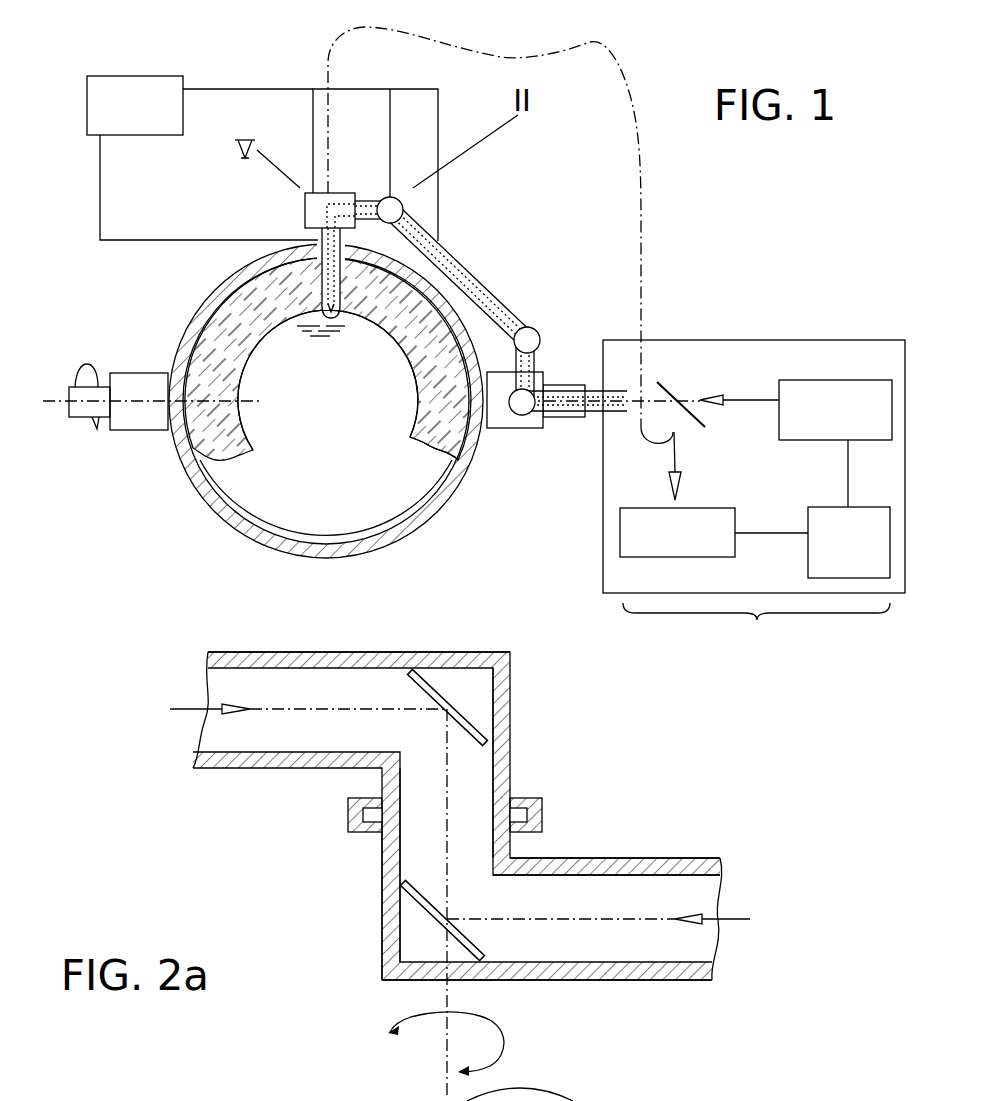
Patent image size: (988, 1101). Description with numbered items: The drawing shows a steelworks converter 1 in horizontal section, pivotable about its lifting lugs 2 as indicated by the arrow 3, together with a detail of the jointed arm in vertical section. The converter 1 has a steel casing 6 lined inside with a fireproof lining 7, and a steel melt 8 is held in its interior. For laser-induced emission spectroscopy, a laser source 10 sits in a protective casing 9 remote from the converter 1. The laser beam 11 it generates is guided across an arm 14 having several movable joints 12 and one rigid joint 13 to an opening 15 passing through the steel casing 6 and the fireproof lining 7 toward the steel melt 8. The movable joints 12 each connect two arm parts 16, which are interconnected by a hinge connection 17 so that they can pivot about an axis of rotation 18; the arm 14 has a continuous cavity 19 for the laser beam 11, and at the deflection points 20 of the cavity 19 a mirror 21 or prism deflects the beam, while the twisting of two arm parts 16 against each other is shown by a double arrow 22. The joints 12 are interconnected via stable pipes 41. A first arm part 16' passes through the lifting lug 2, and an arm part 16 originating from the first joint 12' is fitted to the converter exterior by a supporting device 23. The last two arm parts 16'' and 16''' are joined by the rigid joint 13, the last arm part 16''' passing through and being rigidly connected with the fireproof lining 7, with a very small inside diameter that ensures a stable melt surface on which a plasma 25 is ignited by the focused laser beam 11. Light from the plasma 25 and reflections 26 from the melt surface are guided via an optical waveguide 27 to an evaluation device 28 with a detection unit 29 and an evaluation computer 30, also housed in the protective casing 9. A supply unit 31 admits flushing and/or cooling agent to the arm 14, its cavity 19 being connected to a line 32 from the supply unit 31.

In FIG. 1, the steelworks converter 1 is at (212, 515).
In FIG. 1, the lifting lugs 2 is at (78, 420).
In FIG. 1, the arrow 3 is at (80, 372).
In FIG. 1, the steel casing 6 is at (400, 523).
In FIG. 1, the fireproof lining 7 is at (177, 445).
In FIG. 1, the steel melt 8 is at (296, 416).
In FIG. 1, the protective casing 9 is at (818, 595).
In FIG. 1, the laser source 10 is at (816, 421).
In FIG. 1, the laser beam 11 is at (733, 400).
In FIG. 2a, the laser beam 11 is at (742, 920).
In FIG. 1, the movable joints 12 is at (550, 328).
In FIG. 2a, the movable joints 12 is at (321, 906).
In FIG. 1, the first joint 12' is at (508, 456).
In FIG. 1, the rigid joint 13 is at (297, 222).
In FIG. 1, the arm 14 is at (480, 248).
In FIG. 2a, the arm 14 is at (198, 645).
In FIG. 1, the opening 15 is at (357, 270).
In FIG. 1, the arm parts 16 is at (553, 299).
In FIG. 2a, the arm parts 16 is at (429, 866).
In FIG. 1, the first arm part 16' is at (630, 338).
In FIG. 1, the arm part 16'' is at (362, 166).
In FIG. 1, the last arm part 16''' is at (367, 360).
In FIG. 2a, the hinge connection 17 is at (363, 830).
In FIG. 2a, the axis of rotation 18 is at (447, 767).
In FIG. 2a, the cavity 19 is at (637, 947).
In FIG. 2a, the deflection points 20 is at (477, 682).
In FIG. 2a, the mirror 21 is at (477, 727).
In FIG. 2a, the double arrow 22 is at (480, 1023).
In FIG. 1, the supporting device 23 is at (419, 461).
In FIG. 1, the plasma 25 is at (320, 310).
In FIG. 1, the reflections 26 is at (677, 452).
In FIG. 2a, the reflections 26 is at (187, 707).
In FIG. 1, the optical waveguide 27 is at (628, 100).
In FIG. 1, the evaluation device 28 is at (756, 630).
In FIG. 1, the detection unit 29 is at (658, 549).
In FIG. 1, the evaluation computer 30 is at (829, 556).
In FIG. 1, the supply unit 31 is at (121, 119).
In FIG. 1, the line 32 is at (240, 85).
In FIG. 2a, the pipes 41 is at (392, 652).